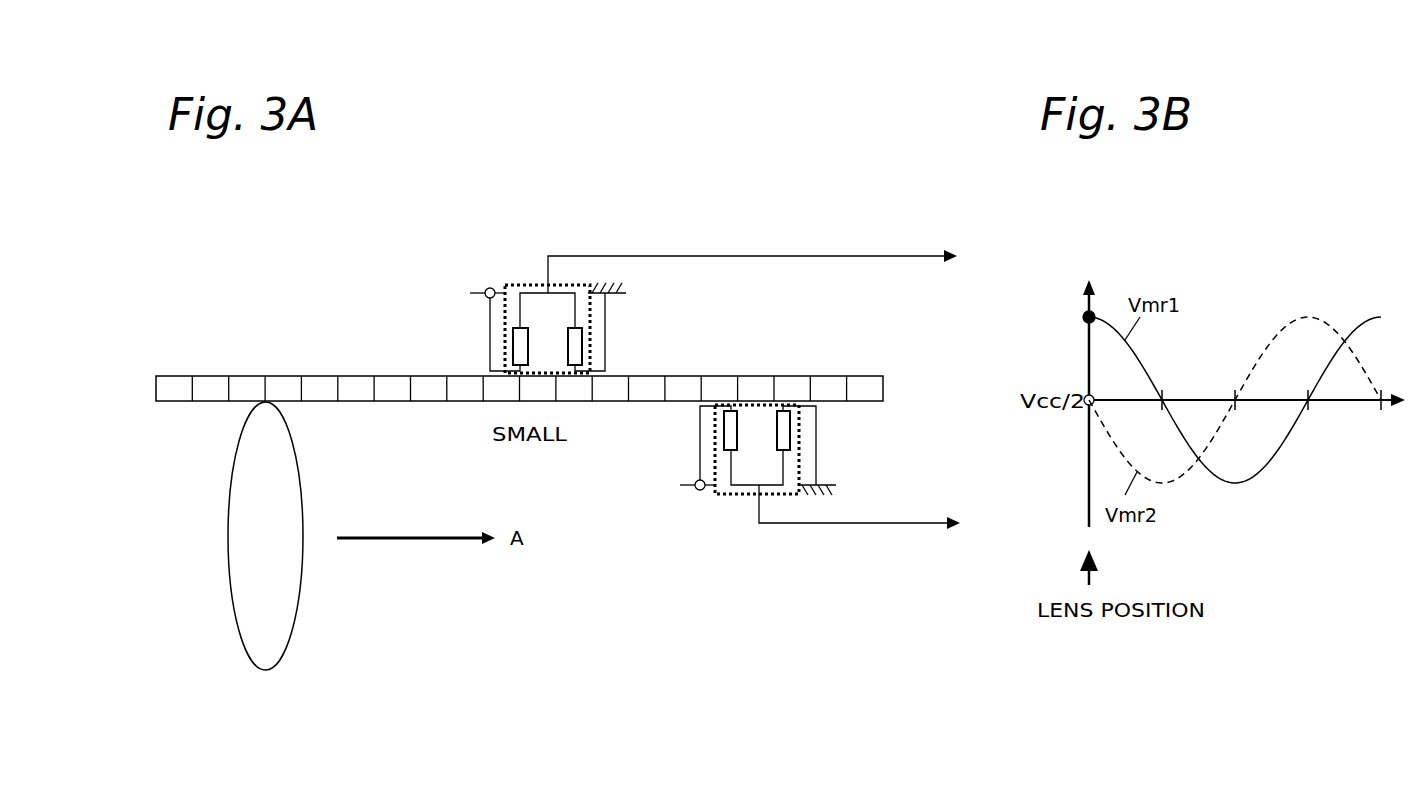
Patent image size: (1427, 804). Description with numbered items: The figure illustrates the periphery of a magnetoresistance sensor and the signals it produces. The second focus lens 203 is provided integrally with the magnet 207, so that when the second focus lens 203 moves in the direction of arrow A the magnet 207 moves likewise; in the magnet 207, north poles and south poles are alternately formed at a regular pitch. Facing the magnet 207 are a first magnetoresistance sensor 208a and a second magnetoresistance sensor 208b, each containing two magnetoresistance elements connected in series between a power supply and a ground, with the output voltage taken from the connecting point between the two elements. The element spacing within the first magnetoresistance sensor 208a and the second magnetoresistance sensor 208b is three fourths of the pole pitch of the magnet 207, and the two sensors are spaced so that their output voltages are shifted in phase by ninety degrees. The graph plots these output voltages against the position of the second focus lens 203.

The magnet 207 is at (249, 368).
The first magnetoresistance sensor 208a is at (518, 283).
The second magnetoresistance sensor 208b is at (737, 499).
The second focus lens 203 is at (240, 640).